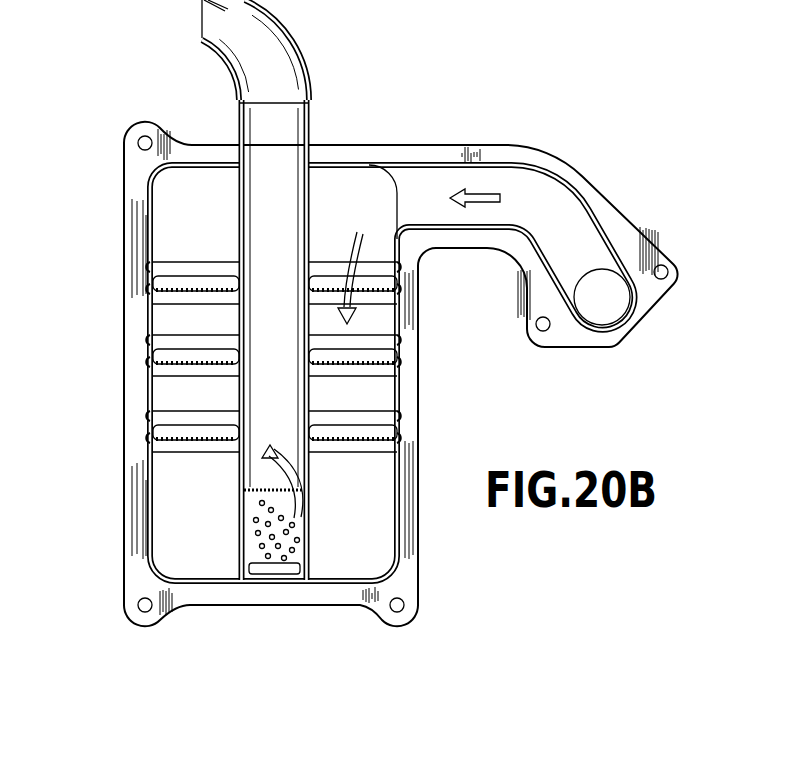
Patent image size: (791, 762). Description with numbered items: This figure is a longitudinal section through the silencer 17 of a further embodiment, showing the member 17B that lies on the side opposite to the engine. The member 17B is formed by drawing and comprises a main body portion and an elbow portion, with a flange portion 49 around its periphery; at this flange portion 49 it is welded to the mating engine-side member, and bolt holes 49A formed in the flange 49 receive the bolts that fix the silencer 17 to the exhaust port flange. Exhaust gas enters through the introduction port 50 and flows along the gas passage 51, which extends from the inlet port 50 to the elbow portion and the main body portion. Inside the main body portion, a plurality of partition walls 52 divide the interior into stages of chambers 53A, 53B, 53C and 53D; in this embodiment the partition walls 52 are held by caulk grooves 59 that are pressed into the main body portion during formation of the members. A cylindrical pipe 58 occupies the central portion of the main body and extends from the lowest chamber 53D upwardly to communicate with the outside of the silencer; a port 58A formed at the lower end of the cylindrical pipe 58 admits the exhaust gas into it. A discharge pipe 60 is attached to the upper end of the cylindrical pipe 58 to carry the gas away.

The silencer 17 is at (108, 495).
The member disposed at the opposite side to the engine 17B is at (423, 165).
The flange portion 49 is at (632, 223).
The bolt holes 49A is at (668, 266).
The introduction port 50 is at (600, 320).
The gas passage 51 is at (492, 175).
The partition walls 52 is at (178, 360).
The chamber 53A is at (180, 226).
The chamber 53B is at (180, 335).
The chamber 53C is at (180, 404).
The chamber 53D is at (180, 502).
The cylindrical pipe 58 is at (287, 172).
The port 58A is at (262, 545).
The caulk grooves 59 is at (395, 418).
The discharge pipe 60 is at (205, 37).